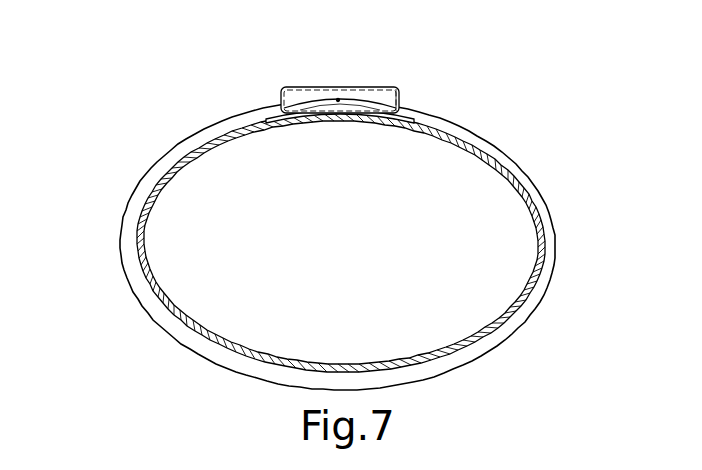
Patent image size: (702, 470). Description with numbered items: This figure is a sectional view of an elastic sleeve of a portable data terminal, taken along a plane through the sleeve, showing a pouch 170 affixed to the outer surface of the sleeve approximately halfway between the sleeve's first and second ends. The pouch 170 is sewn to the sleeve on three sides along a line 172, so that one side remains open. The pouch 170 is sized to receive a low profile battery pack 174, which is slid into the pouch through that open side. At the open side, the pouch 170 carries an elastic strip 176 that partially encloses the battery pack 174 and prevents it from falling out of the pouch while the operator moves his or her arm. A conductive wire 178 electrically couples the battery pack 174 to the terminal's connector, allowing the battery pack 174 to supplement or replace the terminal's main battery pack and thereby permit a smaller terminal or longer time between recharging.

The pouch 170 is at (340, 88).
The line 172 is at (272, 114).
The low profile battery pack 174 is at (372, 105).
The elastic strip 176 is at (399, 92).
The conductive wire 178 is at (338, 100).